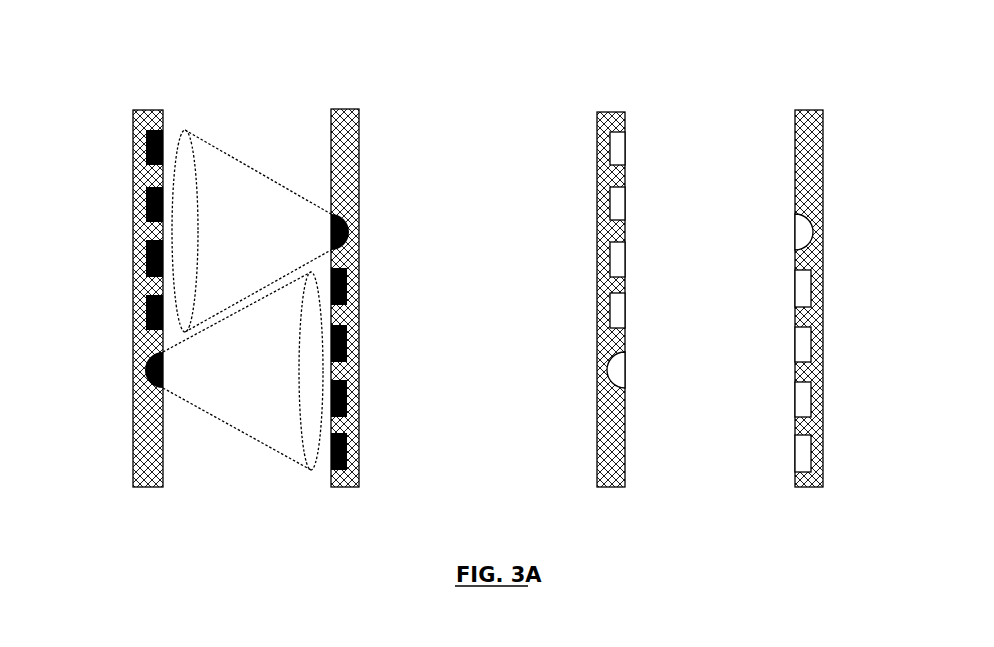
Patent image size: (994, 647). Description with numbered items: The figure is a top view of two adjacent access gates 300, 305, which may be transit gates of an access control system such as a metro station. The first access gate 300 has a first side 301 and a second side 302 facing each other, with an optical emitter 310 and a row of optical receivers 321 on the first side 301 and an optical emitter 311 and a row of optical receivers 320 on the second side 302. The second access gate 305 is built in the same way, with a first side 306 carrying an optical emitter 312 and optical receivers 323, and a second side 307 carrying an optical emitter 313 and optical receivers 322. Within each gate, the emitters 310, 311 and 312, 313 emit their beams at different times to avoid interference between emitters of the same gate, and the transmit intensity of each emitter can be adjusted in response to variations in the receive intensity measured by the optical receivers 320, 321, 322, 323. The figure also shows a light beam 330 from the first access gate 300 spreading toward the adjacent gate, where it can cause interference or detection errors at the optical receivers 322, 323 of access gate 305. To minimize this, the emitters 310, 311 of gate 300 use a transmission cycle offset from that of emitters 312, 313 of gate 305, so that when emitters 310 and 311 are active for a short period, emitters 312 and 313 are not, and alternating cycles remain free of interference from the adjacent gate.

The access gate 300 is at (158, 48).
The first side 301 is at (150, 110).
The second side 302 is at (348, 110).
The access gate 305 is at (608, 38).
The first side 306 is at (603, 112).
The second side 307 is at (812, 110).
The optical emitter 310 is at (147, 358).
The optical emitter 311 is at (348, 228).
The optical emitter 312 is at (608, 378).
The optical emitter 313 is at (812, 232).
The optical receivers 320 is at (347, 430).
The optical receivers 321 is at (146, 296).
The optical receivers 322 is at (811, 432).
The optical receivers 323 is at (610, 295).
The light beam 330 is at (300, 392).